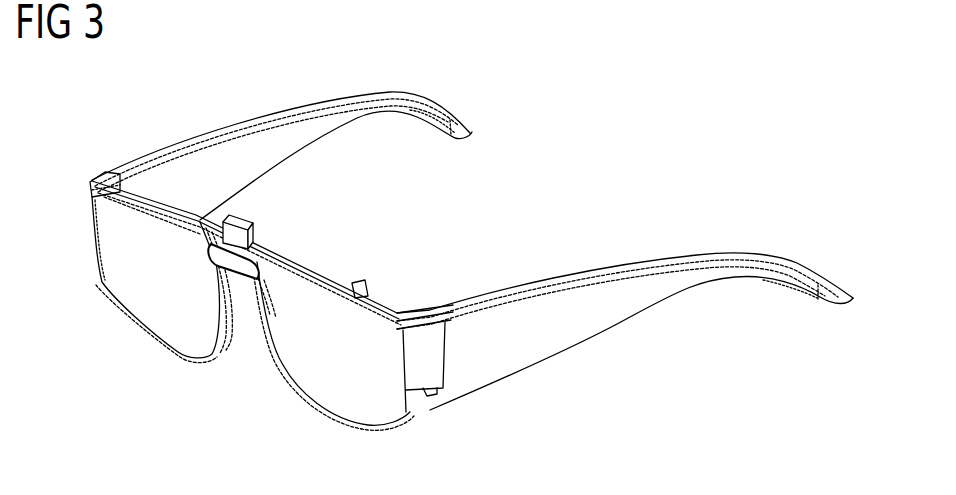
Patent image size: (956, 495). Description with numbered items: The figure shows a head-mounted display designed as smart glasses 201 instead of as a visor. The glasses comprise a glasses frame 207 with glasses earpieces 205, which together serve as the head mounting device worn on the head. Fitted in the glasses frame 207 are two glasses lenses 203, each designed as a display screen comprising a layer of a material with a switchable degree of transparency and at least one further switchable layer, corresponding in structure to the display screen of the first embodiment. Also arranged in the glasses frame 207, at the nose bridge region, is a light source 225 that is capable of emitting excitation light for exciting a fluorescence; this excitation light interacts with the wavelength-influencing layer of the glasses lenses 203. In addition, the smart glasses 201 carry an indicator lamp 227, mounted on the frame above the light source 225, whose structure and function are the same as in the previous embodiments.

The smart glasses 201 is at (449, 246).
The glasses lenses 203 is at (133, 320).
The glasses earpieces 205 is at (198, 163).
The glasses frame 207 is at (282, 260).
The light source 225 is at (240, 267).
The indicator lamp 227 is at (228, 221).